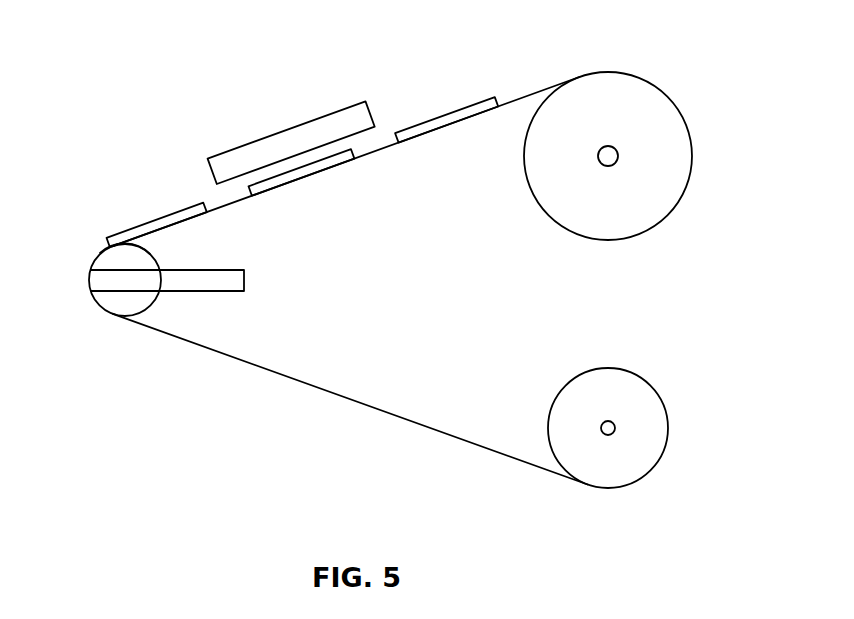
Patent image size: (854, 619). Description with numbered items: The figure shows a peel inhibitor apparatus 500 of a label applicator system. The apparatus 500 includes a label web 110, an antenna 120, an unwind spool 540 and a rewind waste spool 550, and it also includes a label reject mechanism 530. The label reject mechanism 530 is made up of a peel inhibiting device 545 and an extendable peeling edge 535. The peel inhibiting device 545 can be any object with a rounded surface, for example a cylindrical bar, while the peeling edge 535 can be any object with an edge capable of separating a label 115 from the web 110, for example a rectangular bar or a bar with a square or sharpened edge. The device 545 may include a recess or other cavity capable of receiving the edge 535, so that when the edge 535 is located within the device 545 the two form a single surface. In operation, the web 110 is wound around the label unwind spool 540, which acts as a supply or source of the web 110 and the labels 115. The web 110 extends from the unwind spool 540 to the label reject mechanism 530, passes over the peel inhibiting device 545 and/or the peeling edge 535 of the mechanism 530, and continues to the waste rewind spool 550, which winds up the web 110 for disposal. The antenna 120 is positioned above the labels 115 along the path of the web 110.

The peel inhibitor apparatus 500 is at (150, 46).
The label web 110 is at (533, 93).
The label 115 is at (162, 217).
The antenna 120 is at (292, 128).
The unwind spool 540 is at (692, 155).
The rewind waste spool 550 is at (668, 427).
The peel inhibiting device 545 is at (100, 253).
The label reject mechanism 530 is at (150, 254).
The extendable peeling edge 535 is at (200, 292).